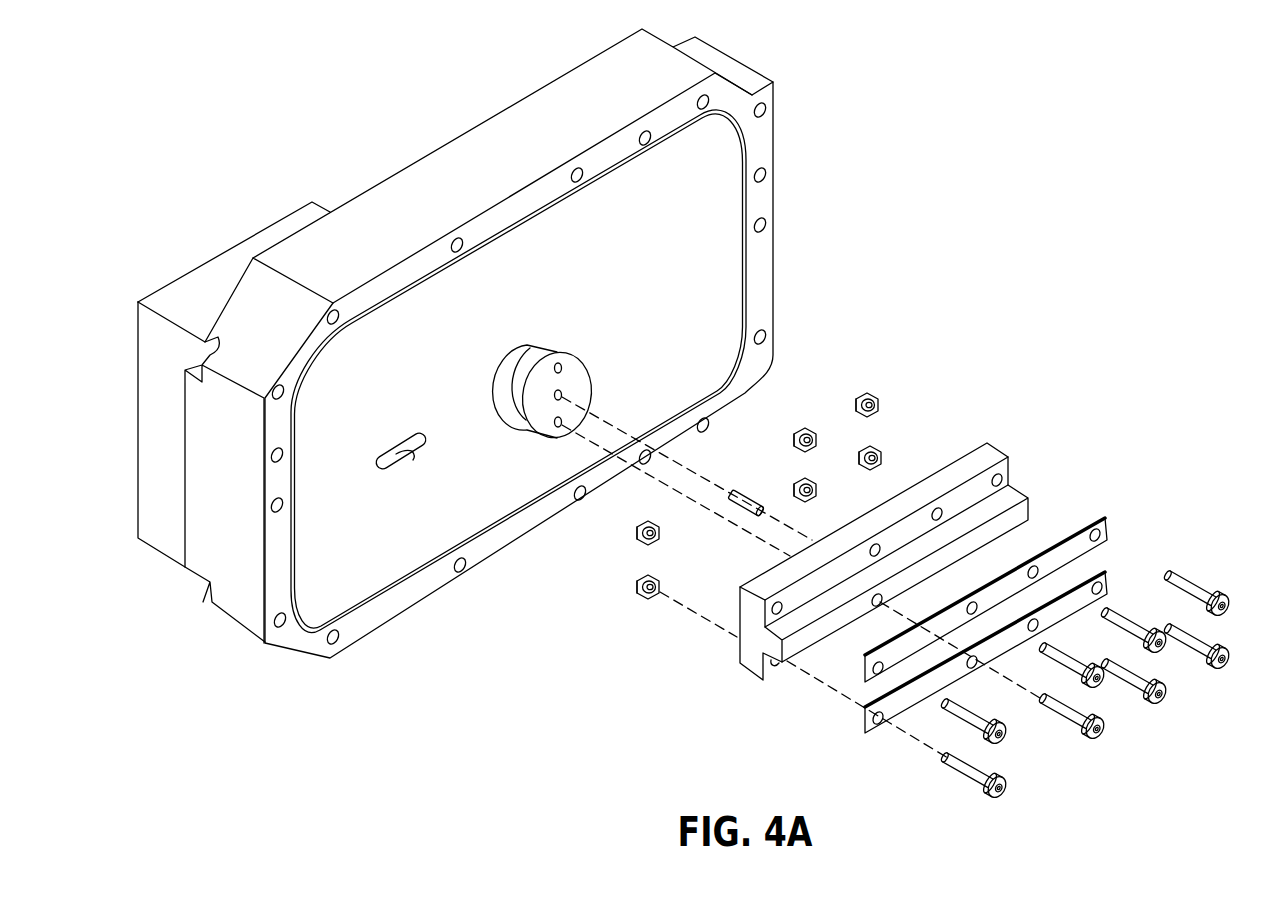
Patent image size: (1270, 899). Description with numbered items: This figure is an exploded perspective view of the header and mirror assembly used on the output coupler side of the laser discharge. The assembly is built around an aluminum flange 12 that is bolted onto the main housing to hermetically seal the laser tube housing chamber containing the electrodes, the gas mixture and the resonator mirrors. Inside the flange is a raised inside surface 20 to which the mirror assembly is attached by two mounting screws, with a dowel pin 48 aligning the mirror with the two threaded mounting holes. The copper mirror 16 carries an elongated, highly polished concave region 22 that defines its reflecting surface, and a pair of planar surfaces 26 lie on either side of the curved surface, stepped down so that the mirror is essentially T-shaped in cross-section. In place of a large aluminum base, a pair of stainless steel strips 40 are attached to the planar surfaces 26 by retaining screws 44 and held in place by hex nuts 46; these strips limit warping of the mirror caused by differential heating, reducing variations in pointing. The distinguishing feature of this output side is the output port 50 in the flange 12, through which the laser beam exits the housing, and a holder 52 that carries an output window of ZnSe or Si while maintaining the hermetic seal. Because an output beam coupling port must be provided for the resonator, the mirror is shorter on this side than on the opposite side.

The aluminum flange 12 is at (455, 343).
The copper mirror 16 is at (923, 537).
The raised inside surface 20 is at (518, 348).
The concave region 22 is at (1017, 517).
The planar surfaces 26 is at (1006, 483).
The stainless steel strips 40 is at (1108, 528).
The retaining screws 44 is at (1217, 590).
The hex nuts 46 is at (880, 404).
The dowel pin 48 is at (747, 491).
The output port 50 is at (417, 456).
The holder 52 is at (215, 277).